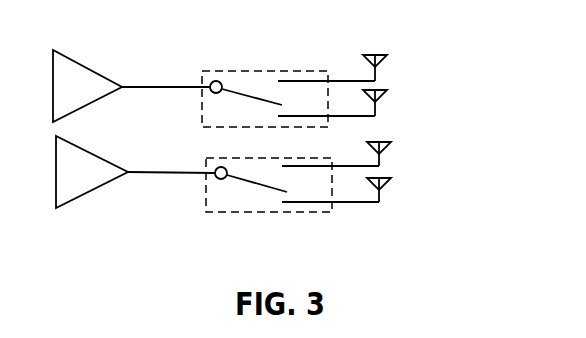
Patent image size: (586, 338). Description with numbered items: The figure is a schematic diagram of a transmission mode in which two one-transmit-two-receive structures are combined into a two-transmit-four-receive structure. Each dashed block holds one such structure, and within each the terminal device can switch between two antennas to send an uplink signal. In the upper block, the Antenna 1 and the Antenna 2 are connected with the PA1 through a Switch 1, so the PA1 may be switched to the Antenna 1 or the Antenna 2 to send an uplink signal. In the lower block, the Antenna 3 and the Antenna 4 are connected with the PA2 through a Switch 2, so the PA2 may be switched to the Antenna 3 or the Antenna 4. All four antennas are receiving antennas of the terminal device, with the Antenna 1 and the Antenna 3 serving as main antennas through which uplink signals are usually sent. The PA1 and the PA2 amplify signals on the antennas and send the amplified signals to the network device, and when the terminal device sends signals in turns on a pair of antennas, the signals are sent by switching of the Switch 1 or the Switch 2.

The power amplifier PA1 is at (131, 86).
The power amplifier PA2 is at (135, 172).
The switch Switch 1 is at (261, 92).
The switch Switch 2 is at (255, 187).
The antenna Antenna 1 is at (428, 69).
The antenna Antenna 2 is at (428, 102).
The antenna Antenna 3 is at (431, 155).
The antenna Antenna 4 is at (431, 189).